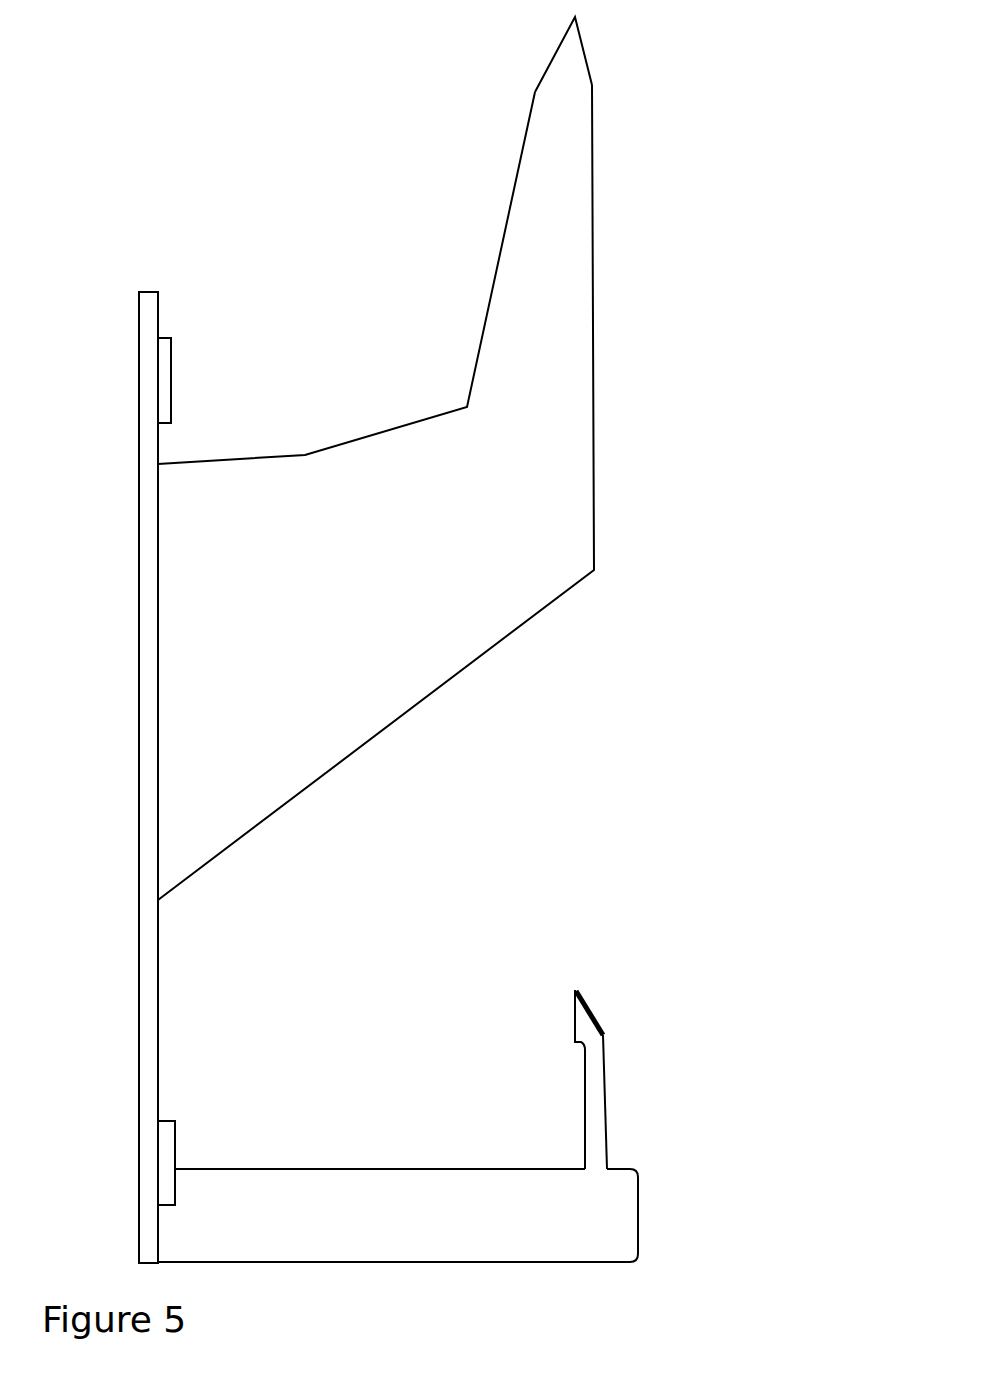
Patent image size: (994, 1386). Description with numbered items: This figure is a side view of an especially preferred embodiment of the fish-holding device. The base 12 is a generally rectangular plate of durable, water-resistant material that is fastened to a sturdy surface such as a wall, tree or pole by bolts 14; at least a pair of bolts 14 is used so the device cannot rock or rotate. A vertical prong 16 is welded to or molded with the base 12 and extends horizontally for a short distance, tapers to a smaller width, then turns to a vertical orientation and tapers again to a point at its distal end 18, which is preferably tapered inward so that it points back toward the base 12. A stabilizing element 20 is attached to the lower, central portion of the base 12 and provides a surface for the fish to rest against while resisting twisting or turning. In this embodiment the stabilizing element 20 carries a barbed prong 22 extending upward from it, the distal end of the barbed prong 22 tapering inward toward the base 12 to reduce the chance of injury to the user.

The base 12 is at (150, 978).
The bolt 14 is at (162, 380).
The vertical prong 16 is at (338, 581).
The distal end 18 is at (570, 66).
The stabilizing element 20 is at (603, 1198).
The barbed prong 22 is at (588, 1037).